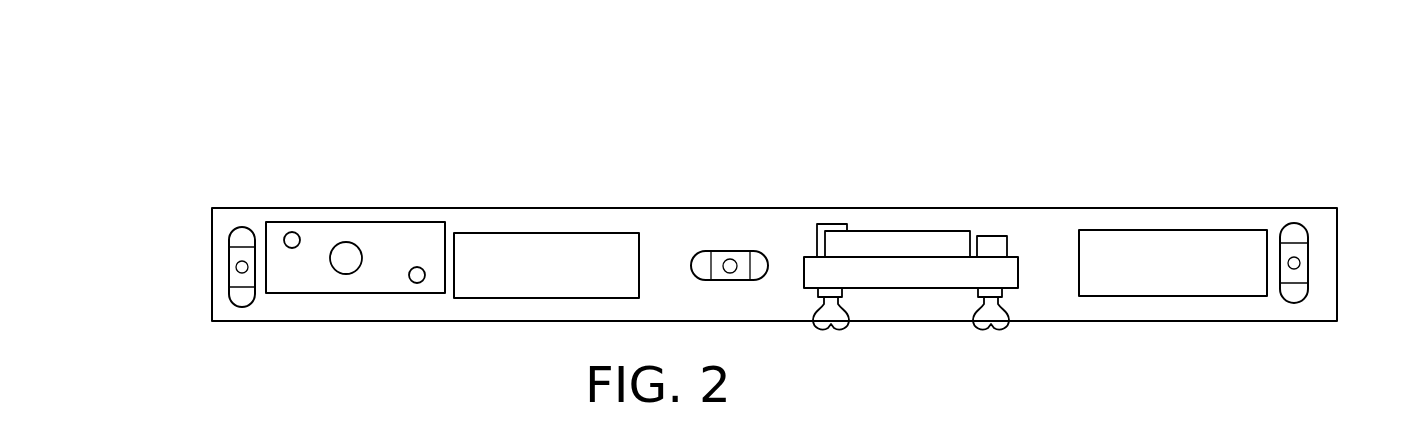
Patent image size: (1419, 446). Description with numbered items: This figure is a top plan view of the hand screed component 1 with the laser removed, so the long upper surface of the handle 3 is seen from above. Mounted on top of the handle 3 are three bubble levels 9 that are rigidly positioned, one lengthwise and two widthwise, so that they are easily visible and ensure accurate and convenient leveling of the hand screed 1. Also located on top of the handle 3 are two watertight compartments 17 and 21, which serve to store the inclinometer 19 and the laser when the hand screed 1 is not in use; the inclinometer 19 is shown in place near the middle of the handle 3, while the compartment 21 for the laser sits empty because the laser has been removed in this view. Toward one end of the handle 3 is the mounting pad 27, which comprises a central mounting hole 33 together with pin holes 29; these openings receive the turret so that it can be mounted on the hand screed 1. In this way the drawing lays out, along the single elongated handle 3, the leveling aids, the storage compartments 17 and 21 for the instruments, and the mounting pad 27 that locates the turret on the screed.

The hand screed component 1 is at (787, 131).
The handle 3 is at (1325, 250).
The bubble levels 9 is at (243, 235).
The watertight compartment 17 is at (1112, 252).
The inclinometer 19 is at (808, 188).
The watertight compartment 21 is at (548, 253).
The mounting pad 27 is at (408, 235).
The pin holes 29 is at (292, 238).
The mounting hole 33 is at (347, 257).